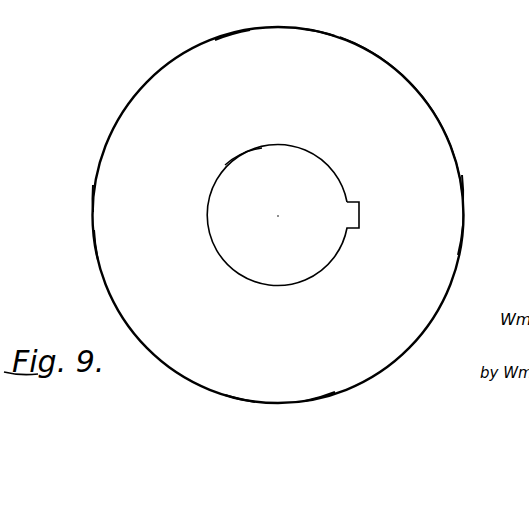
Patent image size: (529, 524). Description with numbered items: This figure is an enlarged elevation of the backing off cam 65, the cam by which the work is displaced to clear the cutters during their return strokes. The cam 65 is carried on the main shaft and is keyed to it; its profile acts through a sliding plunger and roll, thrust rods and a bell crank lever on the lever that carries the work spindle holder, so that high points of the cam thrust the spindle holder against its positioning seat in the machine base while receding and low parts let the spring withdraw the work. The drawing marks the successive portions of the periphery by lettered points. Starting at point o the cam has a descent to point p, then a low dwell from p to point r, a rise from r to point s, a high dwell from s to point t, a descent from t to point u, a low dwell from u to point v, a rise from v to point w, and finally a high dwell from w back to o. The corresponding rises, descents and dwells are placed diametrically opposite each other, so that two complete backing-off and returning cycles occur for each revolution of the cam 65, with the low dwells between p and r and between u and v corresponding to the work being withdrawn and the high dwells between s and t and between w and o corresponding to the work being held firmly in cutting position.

The cam 65 is at (187, 70).
The point p is at (232, 33).
The point o is at (318, 30).
The point w is at (465, 192).
The point v is at (463, 238).
The point r is at (93, 197).
The point s is at (90, 243).
The point t is at (240, 402).
The point u is at (323, 396).